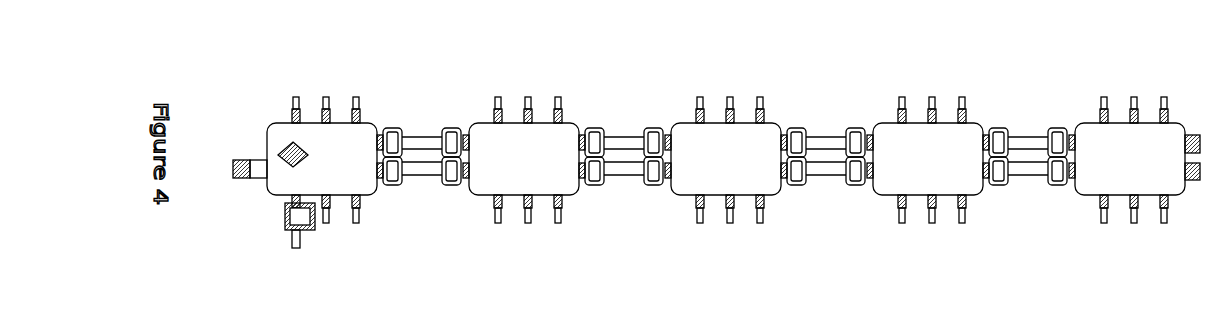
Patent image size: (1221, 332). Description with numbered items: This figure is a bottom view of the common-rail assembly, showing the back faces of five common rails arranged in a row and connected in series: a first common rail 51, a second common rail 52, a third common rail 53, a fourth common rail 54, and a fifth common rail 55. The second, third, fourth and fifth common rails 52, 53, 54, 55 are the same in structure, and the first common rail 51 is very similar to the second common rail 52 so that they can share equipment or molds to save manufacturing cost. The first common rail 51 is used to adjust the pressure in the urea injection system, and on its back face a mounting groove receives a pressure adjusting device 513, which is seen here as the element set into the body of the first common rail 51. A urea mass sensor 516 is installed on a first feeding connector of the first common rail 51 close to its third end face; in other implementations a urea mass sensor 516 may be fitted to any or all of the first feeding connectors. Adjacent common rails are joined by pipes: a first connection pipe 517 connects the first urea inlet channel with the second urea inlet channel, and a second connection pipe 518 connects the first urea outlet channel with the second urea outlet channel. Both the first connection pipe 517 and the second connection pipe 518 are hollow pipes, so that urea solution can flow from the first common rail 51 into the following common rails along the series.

The first common rail 51 is at (285, 170).
The second common rail 52 is at (487, 158).
The third common rail 53 is at (688, 158).
The fourth common rail 54 is at (890, 158).
The fifth common rail 55 is at (1092, 158).
The pressure adjusting device 513 is at (293, 143).
The urea mass sensor 516 is at (300, 227).
The first connection pipe 517 is at (425, 170).
The second connection pipe 518 is at (417, 140).